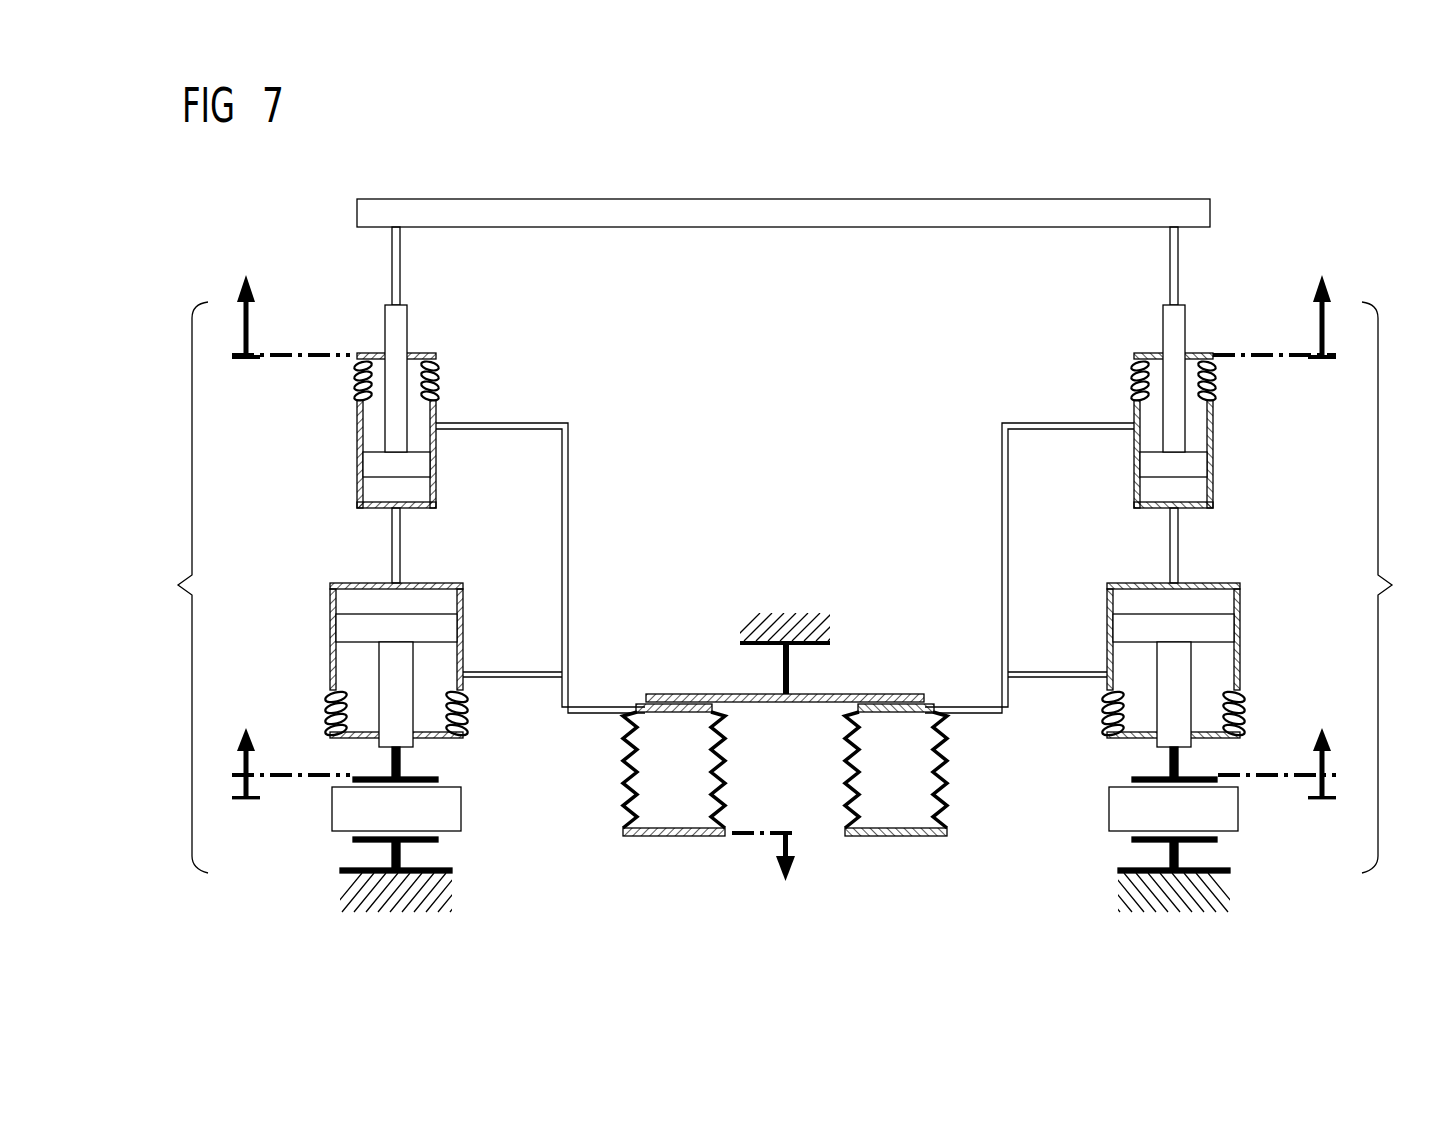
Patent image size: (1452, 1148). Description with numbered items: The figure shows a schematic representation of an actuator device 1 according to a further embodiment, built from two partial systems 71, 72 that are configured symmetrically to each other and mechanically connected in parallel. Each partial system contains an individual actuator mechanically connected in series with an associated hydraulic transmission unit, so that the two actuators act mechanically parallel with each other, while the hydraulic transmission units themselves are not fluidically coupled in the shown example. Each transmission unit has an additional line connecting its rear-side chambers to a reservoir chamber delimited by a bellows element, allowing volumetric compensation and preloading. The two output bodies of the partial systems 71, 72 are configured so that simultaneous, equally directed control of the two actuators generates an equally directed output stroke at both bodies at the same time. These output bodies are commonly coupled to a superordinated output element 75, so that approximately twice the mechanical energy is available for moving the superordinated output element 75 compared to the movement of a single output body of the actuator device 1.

The actuator device 1 is at (285, 198).
The first partial system 71 is at (176, 587).
The second partial system 72 is at (1393, 587).
The superordinated output element 75 is at (783, 229).